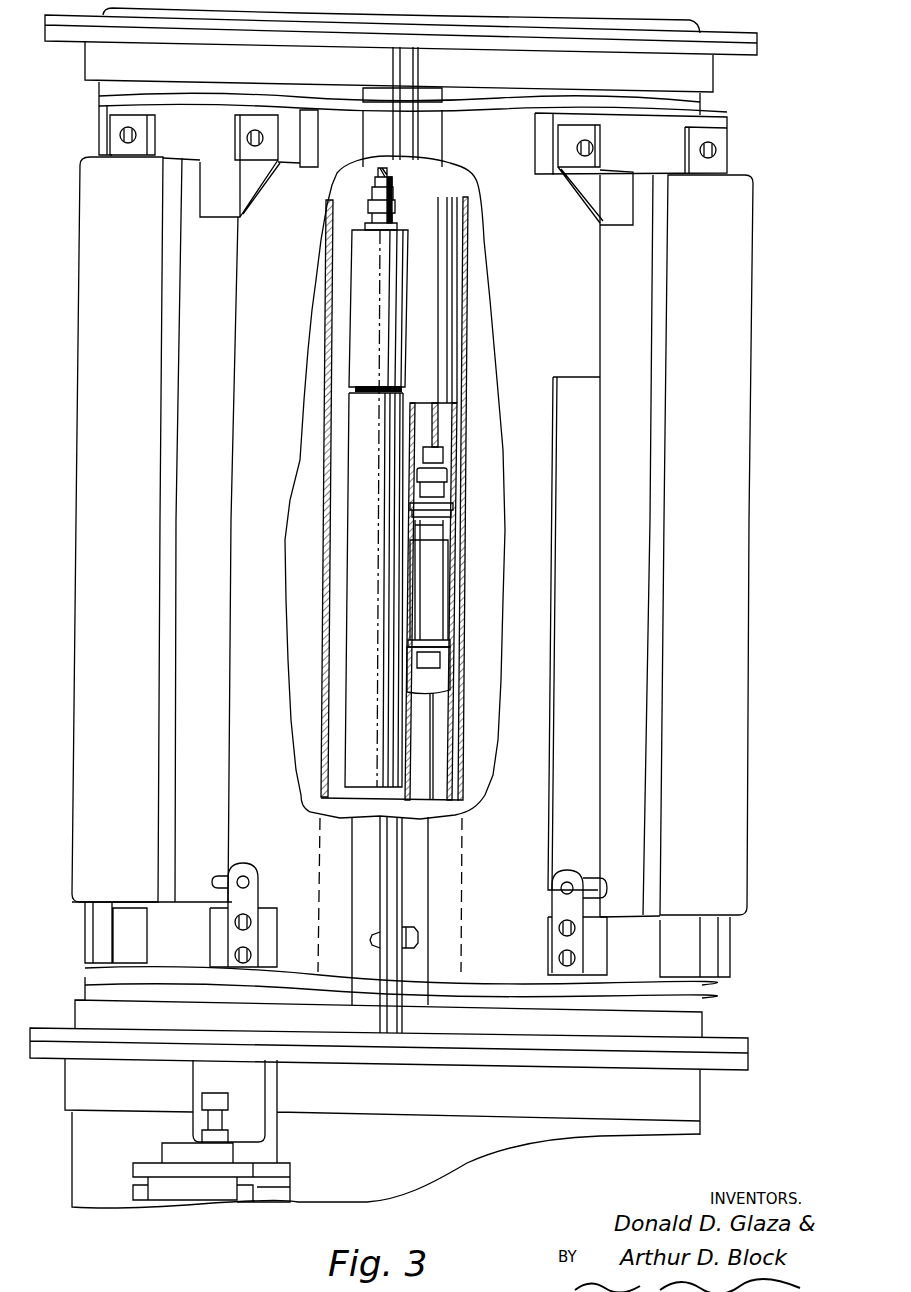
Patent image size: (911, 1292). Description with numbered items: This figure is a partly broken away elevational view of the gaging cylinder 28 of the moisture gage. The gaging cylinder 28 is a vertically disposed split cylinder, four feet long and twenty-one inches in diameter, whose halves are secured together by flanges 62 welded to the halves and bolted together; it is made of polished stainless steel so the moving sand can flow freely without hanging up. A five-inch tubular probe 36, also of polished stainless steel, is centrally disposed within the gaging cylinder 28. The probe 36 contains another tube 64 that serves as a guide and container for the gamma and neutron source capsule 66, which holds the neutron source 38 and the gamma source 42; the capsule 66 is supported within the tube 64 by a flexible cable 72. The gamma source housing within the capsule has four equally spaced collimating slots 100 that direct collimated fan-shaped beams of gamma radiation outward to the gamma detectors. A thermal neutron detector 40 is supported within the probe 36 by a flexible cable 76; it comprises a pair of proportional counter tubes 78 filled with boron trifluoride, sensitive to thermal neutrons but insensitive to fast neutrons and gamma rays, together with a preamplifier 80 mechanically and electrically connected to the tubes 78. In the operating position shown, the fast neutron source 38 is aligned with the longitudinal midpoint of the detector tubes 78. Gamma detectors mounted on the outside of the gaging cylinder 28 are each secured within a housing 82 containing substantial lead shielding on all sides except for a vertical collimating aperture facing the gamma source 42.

The gaging cylinder 28 is at (99, 125).
The tubular probe 36 is at (460, 750).
The neutron source 38 is at (425, 620).
The thermal neutron detector 40 is at (339, 446).
The gamma source 42 is at (415, 553).
The flanges 62 is at (405, 890).
The tube 64 is at (450, 668).
The gamma and neutron source capsule 66 is at (447, 517).
The flexible cable 72 is at (437, 433).
The flexible cable 76 is at (384, 174).
The proportional counter tubes 78 is at (352, 553).
The preamplifier 80 is at (356, 316).
The housing 82 is at (80, 287).
The collimating slots 100 is at (445, 545).